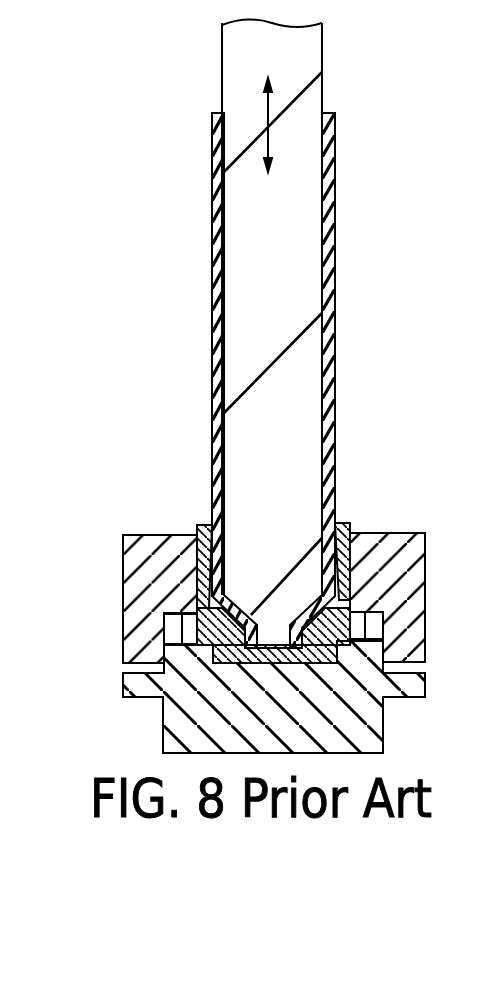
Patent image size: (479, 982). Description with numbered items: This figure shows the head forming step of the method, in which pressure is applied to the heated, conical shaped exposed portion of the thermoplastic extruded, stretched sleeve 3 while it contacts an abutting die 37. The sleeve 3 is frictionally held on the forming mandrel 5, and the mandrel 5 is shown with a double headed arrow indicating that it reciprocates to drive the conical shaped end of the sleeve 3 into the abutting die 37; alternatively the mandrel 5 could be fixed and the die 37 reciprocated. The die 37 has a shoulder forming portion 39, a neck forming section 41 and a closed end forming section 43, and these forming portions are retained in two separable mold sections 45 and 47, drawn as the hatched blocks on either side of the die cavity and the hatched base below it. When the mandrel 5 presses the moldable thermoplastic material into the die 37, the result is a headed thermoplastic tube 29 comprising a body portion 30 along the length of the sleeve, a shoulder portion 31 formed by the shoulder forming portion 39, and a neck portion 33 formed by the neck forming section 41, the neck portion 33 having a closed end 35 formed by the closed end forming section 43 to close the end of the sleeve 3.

The thermoplastic extruded, stretched sleeve 3 is at (335, 295).
The forming mandrel 5 is at (309, 103).
The headed thermoplastic tube 29 is at (284, 380).
The body portion 30 is at (212, 392).
The shoulder portion 31 is at (200, 592).
The neck portion 33 is at (385, 682).
The closed end 35 is at (290, 662).
The abutting die 37 is at (255, 705).
The shoulder forming portion 39 is at (355, 542).
The neck forming section 41 is at (350, 614).
The closed end forming section 43 is at (322, 657).
The separable mold section 45 is at (160, 537).
The separable mold section 47 is at (360, 745).